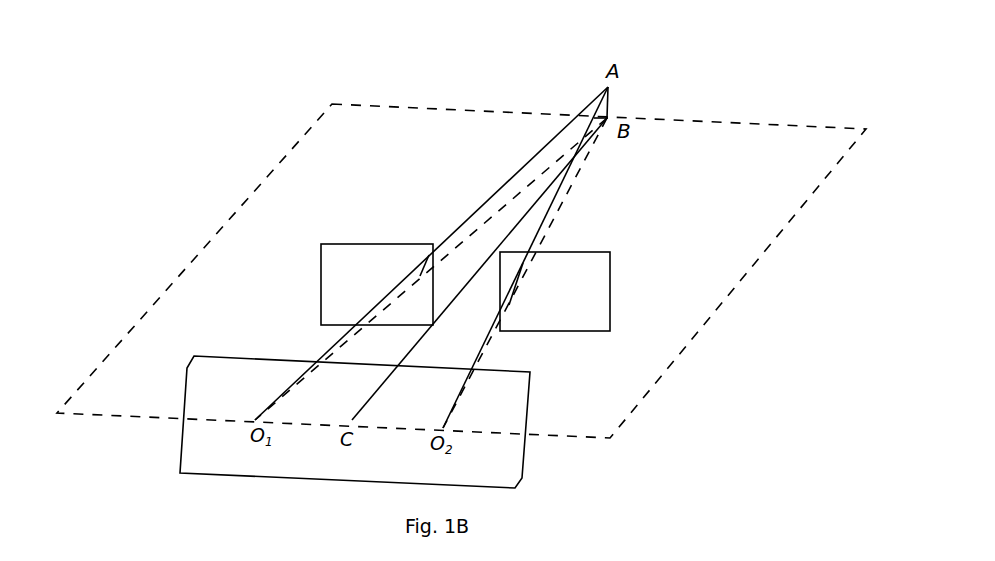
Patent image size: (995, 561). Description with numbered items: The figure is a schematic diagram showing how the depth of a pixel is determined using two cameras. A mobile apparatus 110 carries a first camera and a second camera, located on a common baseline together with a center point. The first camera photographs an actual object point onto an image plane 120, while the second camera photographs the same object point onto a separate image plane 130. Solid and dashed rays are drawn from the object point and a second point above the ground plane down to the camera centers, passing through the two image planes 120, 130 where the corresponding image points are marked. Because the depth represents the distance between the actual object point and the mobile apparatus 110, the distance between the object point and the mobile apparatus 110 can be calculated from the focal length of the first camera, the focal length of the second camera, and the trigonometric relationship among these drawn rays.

The mobile apparatus 110 is at (522, 476).
The image plane 120 is at (337, 244).
The image plane 130 is at (612, 300).